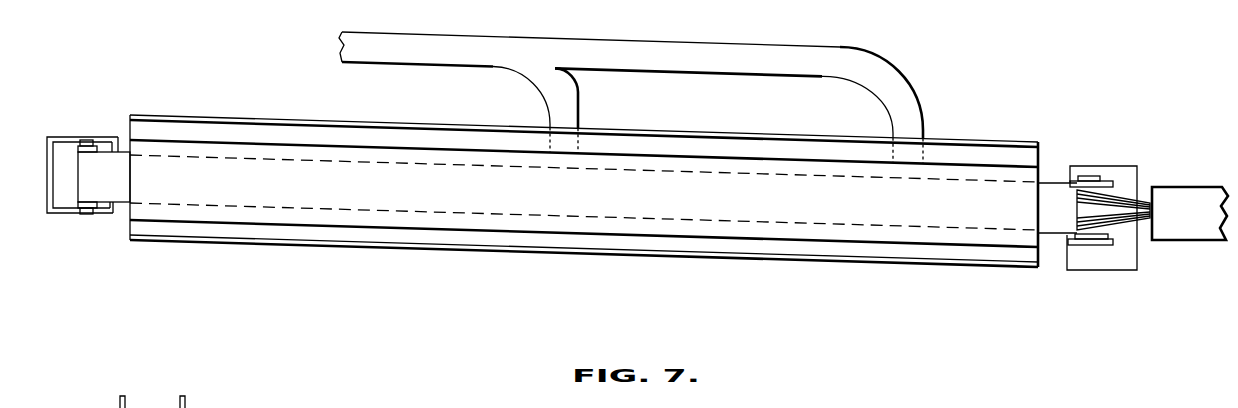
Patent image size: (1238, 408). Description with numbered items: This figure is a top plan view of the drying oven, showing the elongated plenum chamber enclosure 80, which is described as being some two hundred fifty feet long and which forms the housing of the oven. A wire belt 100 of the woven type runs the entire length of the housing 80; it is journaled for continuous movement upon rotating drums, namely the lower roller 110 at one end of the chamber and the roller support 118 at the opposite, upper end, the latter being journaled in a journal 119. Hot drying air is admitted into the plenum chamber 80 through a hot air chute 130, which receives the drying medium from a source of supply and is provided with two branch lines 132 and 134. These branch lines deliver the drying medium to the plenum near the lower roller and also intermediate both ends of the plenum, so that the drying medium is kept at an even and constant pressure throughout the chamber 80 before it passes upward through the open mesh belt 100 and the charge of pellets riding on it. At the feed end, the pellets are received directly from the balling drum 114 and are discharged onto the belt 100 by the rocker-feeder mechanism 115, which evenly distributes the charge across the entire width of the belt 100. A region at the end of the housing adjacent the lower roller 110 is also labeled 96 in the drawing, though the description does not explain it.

The plenum chamber enclosure 80 is at (840, 266).
The inner tube end 96 is at (1048, 190).
The wire belt 100 is at (418, 205).
The lower roller 110 is at (1101, 241).
The balling drum 114 is at (1177, 195).
The rocker-feeder mechanism 115 is at (1133, 207).
The roller support 118 is at (152, 398).
The journal 119 is at (94, 119).
The hot air chute 130 is at (415, 48).
The branch line 132 is at (565, 108).
The branch line 134 is at (905, 121).